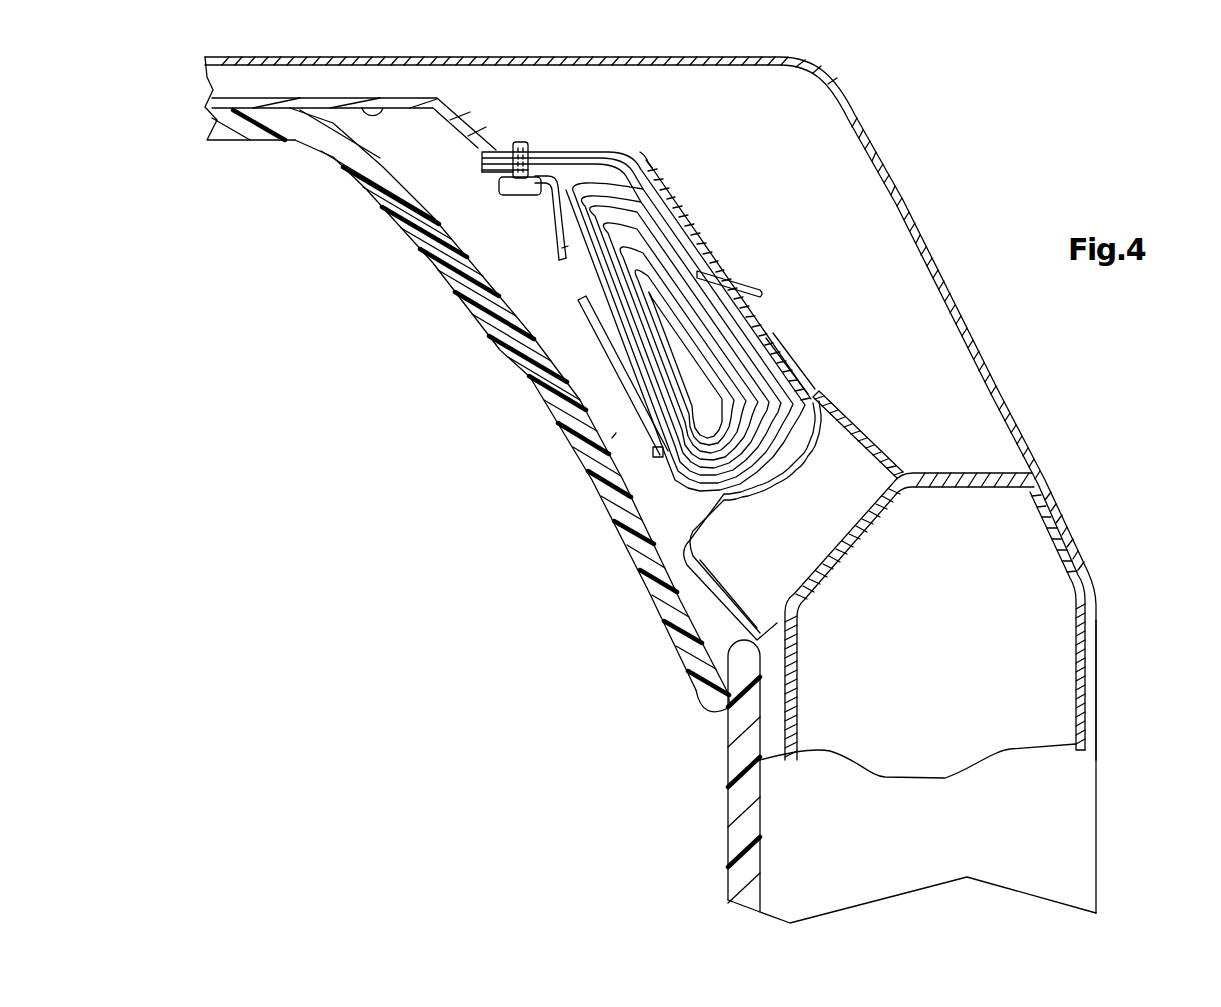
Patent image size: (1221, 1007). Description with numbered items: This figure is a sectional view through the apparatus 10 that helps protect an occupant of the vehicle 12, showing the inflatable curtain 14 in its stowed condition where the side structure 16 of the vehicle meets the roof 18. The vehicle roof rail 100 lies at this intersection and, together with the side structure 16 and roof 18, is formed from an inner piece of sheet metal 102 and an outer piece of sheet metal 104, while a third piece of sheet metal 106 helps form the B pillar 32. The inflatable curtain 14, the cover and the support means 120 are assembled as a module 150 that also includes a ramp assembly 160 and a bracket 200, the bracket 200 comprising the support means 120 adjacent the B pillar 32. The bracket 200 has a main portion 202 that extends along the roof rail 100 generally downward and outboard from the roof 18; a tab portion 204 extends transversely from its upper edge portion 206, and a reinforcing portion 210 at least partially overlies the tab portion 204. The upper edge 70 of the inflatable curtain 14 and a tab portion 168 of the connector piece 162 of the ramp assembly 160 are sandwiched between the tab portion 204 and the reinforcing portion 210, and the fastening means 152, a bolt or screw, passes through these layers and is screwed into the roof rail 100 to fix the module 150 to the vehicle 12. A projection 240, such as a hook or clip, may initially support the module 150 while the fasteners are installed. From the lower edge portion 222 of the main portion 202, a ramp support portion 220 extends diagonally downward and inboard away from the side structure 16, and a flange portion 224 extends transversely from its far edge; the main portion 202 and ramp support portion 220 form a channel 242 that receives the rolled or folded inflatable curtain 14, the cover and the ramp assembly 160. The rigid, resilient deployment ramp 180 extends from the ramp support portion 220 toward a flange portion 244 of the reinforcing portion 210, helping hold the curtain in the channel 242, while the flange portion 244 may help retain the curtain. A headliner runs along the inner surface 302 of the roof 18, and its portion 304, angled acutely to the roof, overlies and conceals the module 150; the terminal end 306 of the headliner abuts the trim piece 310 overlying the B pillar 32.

The apparatus 10 is at (717, 204).
The vehicle 12 is at (967, 182).
The inflatable curtain 14 is at (736, 360).
The side structure 16 is at (1122, 655).
The roof 18 is at (162, 53).
The B pillar 32 is at (1105, 750).
The upper edge 70 is at (484, 170).
The vehicle roof rail 100 is at (914, 180).
The inner piece of sheet metal 102 is at (1077, 628).
The outer piece of sheet metal 104 is at (1099, 627).
The third piece of sheet metal 106 is at (793, 690).
The support means 120 is at (670, 232).
The module 150 is at (603, 457).
The fastening means 152 is at (512, 190).
The ramp assembly 160 is at (766, 407).
The connector piece 162 is at (792, 452).
The tab portion 168 is at (497, 152).
The deployment ramp 180 is at (605, 354).
The bracket 200 is at (692, 243).
The main portion 202 is at (652, 224).
The tab portion 204 is at (538, 155).
The upper edge portion 206 is at (622, 175).
The reinforcing portion 210 is at (487, 163).
The ramp support portion 220 is at (746, 502).
The lower edge portion 222 is at (814, 397).
The flange portion 224 is at (724, 600).
The projection 240 is at (762, 291).
The channel 242 is at (610, 433).
The flange portion 244 is at (560, 251).
The inner surface 302 is at (386, 112).
The portion 304 is at (617, 505).
The terminal end 306 is at (708, 712).
The trim piece 310 is at (748, 795).